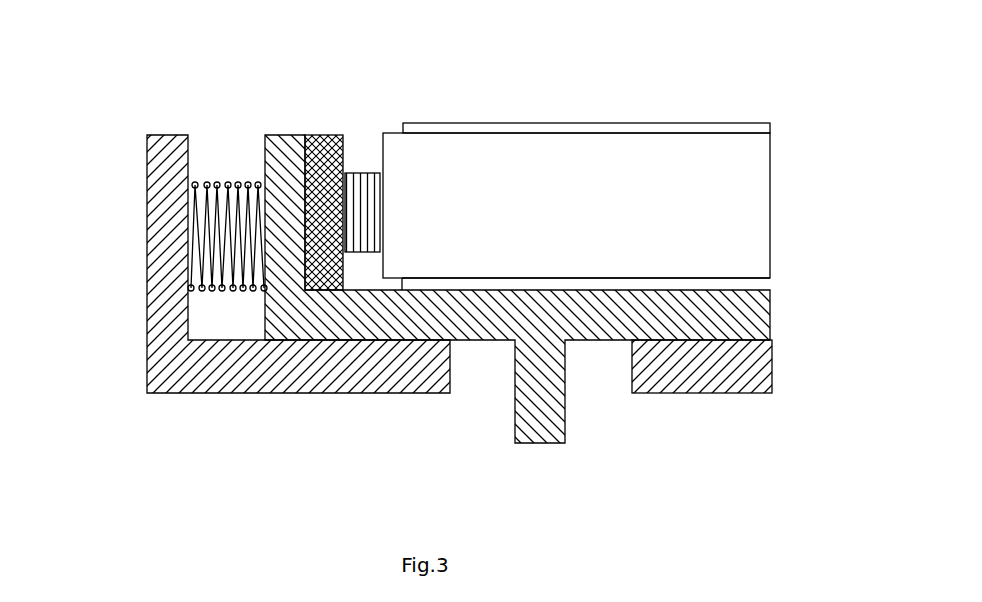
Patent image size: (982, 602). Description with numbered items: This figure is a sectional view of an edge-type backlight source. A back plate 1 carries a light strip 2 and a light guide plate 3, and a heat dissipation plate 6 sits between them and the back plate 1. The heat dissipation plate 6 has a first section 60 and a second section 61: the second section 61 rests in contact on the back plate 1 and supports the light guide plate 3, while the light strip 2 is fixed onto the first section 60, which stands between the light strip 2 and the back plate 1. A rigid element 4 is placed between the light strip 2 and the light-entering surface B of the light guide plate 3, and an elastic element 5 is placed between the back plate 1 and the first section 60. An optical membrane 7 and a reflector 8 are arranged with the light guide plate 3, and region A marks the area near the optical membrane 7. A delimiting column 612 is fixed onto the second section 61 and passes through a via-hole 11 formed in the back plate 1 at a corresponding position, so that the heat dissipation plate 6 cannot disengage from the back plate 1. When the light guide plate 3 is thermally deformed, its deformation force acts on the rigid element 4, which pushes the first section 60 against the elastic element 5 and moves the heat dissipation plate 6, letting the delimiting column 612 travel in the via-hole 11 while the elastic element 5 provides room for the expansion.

The back plate 1 is at (168, 214).
The light strip 2 is at (325, 135).
The light guide plate 3 is at (727, 208).
The rigid element 4 is at (353, 173).
The elastic element 5 is at (227, 182).
The heat dissipation plate 6 is at (542, 233).
The first section 60 is at (287, 157).
The second section 61 is at (713, 320).
The delimiting column 612 is at (550, 428).
The optical membrane 7 is at (657, 130).
The reflector 8 is at (750, 283).
The via-hole 11 is at (487, 390).
The region A is at (576, 122).
The light-entering surface B is at (376, 139).